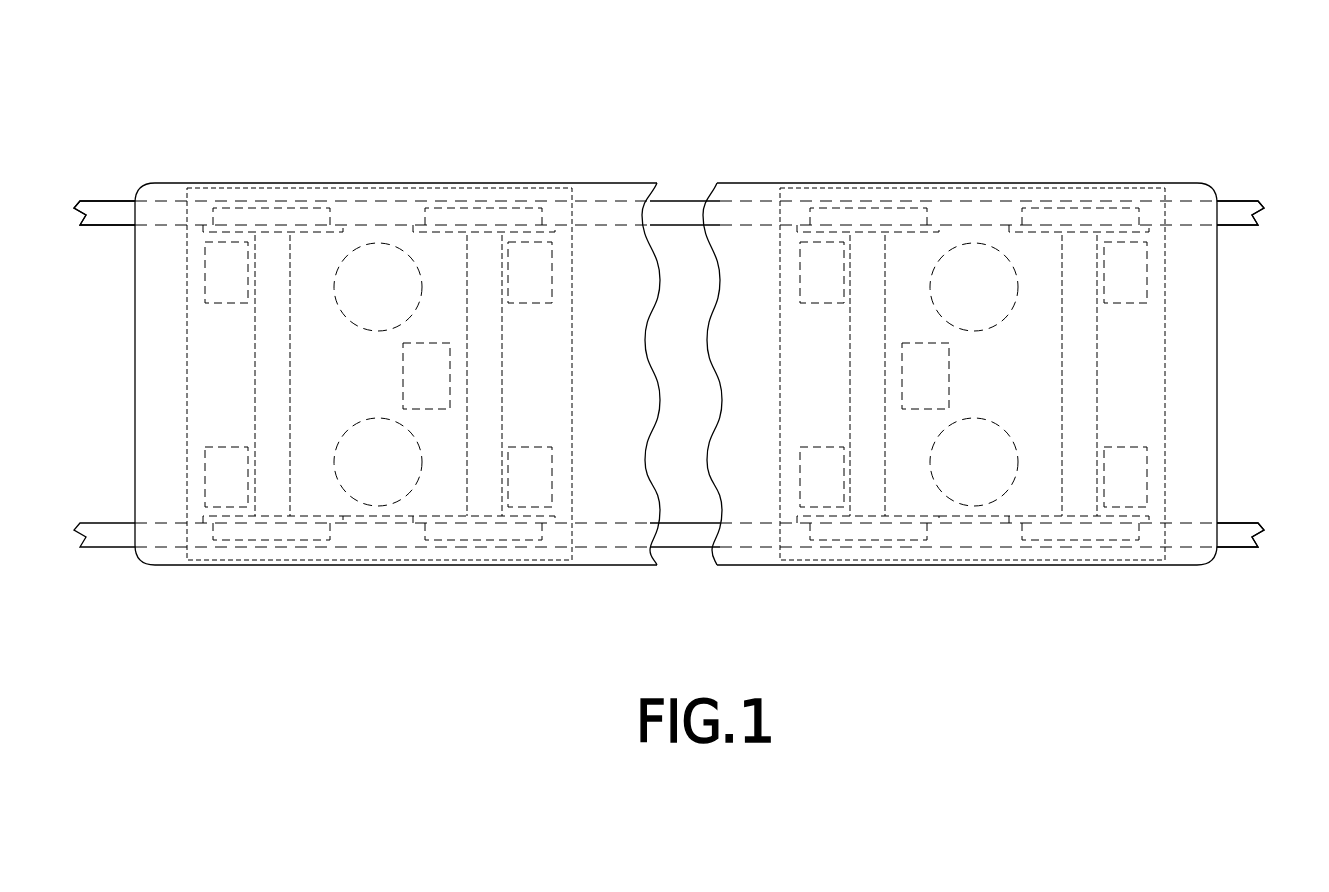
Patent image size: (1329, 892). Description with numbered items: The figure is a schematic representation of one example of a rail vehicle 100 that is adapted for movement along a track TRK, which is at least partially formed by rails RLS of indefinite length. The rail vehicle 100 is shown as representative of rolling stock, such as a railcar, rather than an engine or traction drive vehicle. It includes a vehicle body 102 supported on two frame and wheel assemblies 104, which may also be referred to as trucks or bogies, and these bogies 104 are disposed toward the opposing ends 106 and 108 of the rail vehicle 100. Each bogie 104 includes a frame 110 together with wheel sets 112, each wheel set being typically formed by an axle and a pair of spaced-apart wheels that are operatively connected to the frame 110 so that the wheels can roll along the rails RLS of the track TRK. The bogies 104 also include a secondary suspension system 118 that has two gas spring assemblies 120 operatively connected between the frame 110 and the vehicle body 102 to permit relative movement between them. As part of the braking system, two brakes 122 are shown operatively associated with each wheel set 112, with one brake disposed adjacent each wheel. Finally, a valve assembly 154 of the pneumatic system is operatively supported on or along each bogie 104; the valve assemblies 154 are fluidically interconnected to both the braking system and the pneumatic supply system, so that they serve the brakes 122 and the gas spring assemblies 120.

The rail vehicle 100 is at (992, 96).
The vehicle body 102 is at (593, 178).
The frame and wheel assembly 104 is at (221, 345).
The end of rail vehicle 106 is at (1123, 173).
The end of rail vehicle 108 is at (162, 169).
The frame 110 is at (187, 393).
The wheel set 112 is at (262, 546).
The secondary suspension system 118 is at (357, 526).
The gas spring assembly 120 is at (378, 243).
The brake 122 is at (216, 282).
The valve assembly 154 is at (421, 372).
The track TRK is at (1241, 180).
The rails RLS is at (1232, 212).